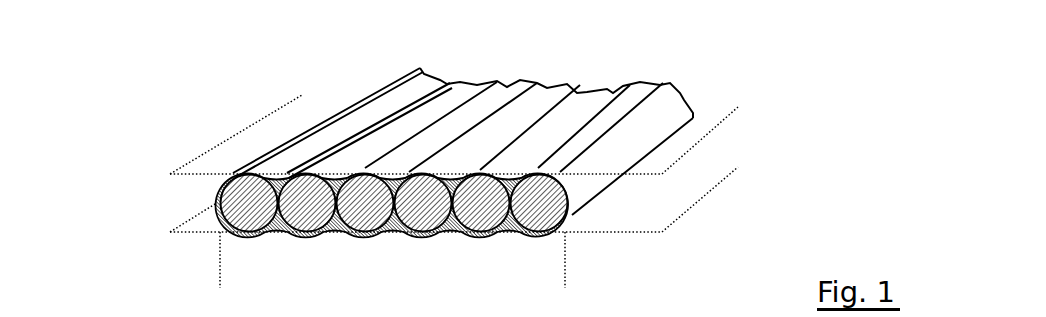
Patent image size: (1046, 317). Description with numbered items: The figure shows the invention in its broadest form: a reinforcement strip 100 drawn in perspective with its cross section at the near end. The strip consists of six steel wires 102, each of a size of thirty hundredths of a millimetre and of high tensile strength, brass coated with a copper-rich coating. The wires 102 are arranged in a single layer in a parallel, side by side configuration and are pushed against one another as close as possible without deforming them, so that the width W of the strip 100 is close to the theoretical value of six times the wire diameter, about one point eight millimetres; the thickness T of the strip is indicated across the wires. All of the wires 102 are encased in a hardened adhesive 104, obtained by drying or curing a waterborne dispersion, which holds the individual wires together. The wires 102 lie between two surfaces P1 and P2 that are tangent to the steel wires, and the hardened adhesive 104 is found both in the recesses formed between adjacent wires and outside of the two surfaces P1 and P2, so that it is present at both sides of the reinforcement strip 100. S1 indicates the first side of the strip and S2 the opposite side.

The reinforcement strip 100 is at (361, 159).
The steel wires 102 is at (240, 195).
The hardened adhesive 104 is at (330, 180).
The thickness T is at (190, 182).
The width W is at (555, 258).
The first side S1 is at (601, 62).
The opposite side S2 is at (455, 258).
The first surface P1 is at (707, 132).
The second surface P2 is at (713, 183).